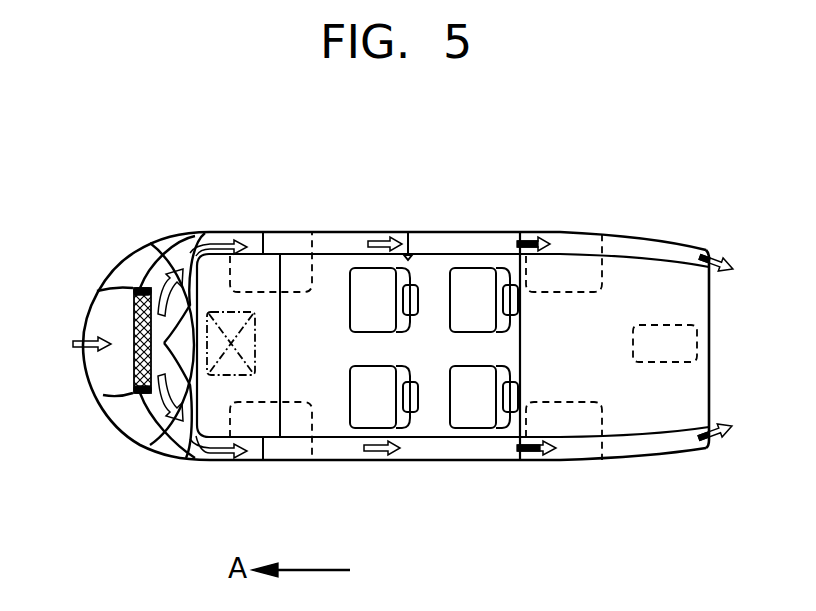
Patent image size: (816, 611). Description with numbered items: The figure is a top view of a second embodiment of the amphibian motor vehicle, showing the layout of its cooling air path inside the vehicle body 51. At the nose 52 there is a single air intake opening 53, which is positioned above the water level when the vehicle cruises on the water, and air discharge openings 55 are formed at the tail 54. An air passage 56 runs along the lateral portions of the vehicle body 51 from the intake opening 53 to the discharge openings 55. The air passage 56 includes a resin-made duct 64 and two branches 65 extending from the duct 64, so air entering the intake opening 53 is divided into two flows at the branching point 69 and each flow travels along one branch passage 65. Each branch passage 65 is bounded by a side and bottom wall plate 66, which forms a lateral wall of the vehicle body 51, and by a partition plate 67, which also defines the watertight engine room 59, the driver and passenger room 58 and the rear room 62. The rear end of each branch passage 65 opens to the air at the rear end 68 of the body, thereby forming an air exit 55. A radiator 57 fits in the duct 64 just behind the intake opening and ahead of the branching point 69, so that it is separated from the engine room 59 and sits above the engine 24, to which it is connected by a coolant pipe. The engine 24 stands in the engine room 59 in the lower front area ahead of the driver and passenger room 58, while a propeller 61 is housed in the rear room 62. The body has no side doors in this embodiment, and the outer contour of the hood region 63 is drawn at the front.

The engine 24 is at (253, 331).
The vehicle body 51 is at (545, 212).
The nose 52 is at (128, 440).
The air intake opening 53 is at (86, 377).
The tail 54 is at (660, 222).
The air discharge opening 55 is at (707, 253).
The air passage 56 is at (416, 222).
The radiator 57 is at (133, 313).
The driver and passenger room 58 is at (483, 442).
The engine room 59 is at (207, 394).
The propeller 61 is at (683, 322).
The rear room 62 is at (635, 427).
The hood 63 is at (92, 270).
The duct 64 is at (146, 268).
The branch passage 65 is at (345, 242).
The side and bottom wall plate 66 is at (325, 232).
The partition plate 67 is at (407, 254).
The rear end 68 is at (720, 376).
The branching point 69 is at (177, 447).